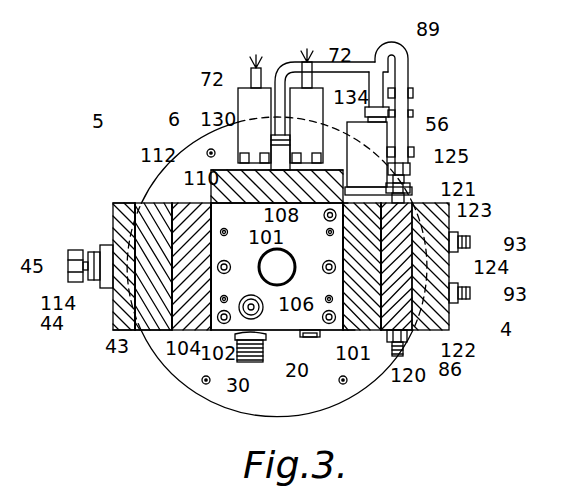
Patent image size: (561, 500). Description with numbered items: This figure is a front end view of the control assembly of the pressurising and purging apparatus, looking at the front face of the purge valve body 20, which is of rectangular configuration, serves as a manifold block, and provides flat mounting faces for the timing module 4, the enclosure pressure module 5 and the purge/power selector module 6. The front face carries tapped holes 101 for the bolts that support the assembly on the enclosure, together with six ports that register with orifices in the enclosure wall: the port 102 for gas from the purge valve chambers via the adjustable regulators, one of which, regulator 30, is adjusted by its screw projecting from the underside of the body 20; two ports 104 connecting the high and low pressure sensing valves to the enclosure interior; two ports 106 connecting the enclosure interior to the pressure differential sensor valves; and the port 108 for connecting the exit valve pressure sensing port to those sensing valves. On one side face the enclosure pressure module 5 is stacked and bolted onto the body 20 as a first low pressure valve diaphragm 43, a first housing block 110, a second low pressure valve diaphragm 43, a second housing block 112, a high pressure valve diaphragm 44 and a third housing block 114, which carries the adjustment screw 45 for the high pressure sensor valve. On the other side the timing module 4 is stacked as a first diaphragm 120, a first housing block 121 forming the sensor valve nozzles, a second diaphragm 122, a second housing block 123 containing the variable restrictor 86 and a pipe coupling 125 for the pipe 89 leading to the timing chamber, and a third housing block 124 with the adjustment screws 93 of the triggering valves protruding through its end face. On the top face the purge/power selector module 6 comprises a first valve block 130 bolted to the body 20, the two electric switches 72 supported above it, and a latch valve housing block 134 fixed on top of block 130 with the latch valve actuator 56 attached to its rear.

The timing module 4 is at (498, 333).
The enclosure pressure module 5 is at (108, 116).
The purge/power selector module 6 is at (182, 123).
The purge valve body 20 is at (290, 330).
The adjustable regulator 30 is at (244, 363).
The low pressure valve diaphragm 43 is at (150, 328).
The high pressure valve diaphragm 44 is at (112, 320).
The adjustment screw 45 is at (70, 262).
The latch valve actuator 56 is at (386, 135).
The electric switches 72 is at (222, 77).
The variable restrictor 86 is at (404, 356).
The pipe 89 is at (396, 47).
The adjustment screws 93 is at (500, 296).
The tapped holes 101 is at (226, 296).
The port 102 is at (248, 312).
The ports 104 is at (213, 322).
The ports 106 is at (325, 300).
The port 108 is at (324, 215).
The first housing block 110 is at (193, 203).
The second housing block 112 is at (153, 203).
The third housing block 114 is at (115, 297).
The first diaphragm 120 is at (379, 332).
The first housing block 121 is at (412, 201).
The second diaphragm 122 is at (390, 312).
The second housing block 123 is at (408, 232).
The third housing block 124 is at (440, 270).
The pipe coupling 125 is at (410, 190).
The first valve block 130 is at (233, 172).
The housing block 134 is at (330, 148).